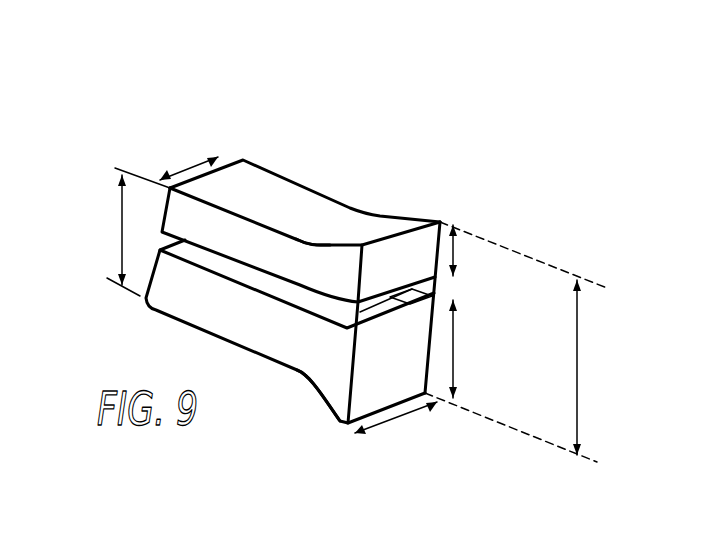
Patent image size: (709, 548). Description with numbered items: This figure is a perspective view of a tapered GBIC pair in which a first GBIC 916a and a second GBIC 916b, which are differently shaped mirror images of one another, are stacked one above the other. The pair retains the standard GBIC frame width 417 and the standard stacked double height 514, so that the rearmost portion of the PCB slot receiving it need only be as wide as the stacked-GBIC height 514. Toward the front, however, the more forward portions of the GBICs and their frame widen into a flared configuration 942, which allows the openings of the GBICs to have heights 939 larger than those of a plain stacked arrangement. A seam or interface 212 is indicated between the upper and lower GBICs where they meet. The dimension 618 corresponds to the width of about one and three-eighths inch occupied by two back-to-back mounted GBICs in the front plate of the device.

The first GBIC 916a is at (301, 276).
The second GBIC 916b is at (290, 331).
The GBIC frame width 417 is at (188, 168).
The flared configuration 942 is at (325, 245).
The opening height 939 is at (456, 253).
The stacked-GBIC double height 514 is at (120, 232).
The joint between sections 212 is at (437, 287).
The width of two back-to-back mounted GBICs 618 is at (577, 380).